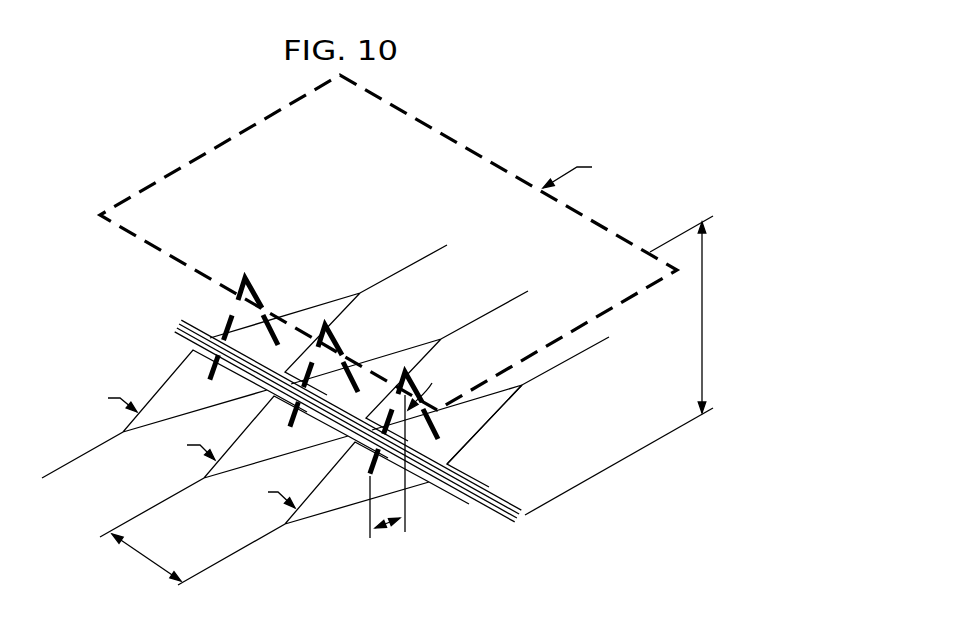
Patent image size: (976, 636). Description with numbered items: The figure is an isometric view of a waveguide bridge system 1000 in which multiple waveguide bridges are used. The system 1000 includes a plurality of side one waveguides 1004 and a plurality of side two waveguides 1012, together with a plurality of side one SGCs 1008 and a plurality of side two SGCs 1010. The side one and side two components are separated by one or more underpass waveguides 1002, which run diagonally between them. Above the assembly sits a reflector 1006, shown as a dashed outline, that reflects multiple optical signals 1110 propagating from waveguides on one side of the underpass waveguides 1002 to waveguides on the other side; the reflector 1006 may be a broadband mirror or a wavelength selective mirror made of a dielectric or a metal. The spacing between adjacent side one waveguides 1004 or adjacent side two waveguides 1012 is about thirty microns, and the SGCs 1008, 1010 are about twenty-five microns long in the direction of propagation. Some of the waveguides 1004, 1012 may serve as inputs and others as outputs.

The waveguide bridge system 1000 is at (592, 115).
The underpass waveguides 1002 is at (500, 515).
The side one waveguides 1004 is at (75, 460).
The reflector 1006 is at (460, 140).
The side one SGCs 1008 is at (322, 507).
The side two SGCs 1010 is at (485, 425).
The side two waveguides 1012 is at (405, 268).
The optical signals 1110 is at (223, 323).